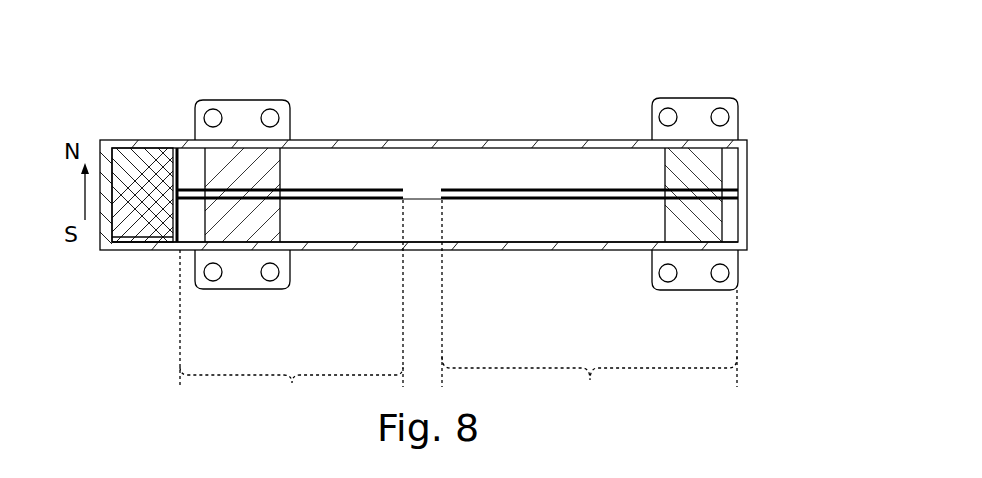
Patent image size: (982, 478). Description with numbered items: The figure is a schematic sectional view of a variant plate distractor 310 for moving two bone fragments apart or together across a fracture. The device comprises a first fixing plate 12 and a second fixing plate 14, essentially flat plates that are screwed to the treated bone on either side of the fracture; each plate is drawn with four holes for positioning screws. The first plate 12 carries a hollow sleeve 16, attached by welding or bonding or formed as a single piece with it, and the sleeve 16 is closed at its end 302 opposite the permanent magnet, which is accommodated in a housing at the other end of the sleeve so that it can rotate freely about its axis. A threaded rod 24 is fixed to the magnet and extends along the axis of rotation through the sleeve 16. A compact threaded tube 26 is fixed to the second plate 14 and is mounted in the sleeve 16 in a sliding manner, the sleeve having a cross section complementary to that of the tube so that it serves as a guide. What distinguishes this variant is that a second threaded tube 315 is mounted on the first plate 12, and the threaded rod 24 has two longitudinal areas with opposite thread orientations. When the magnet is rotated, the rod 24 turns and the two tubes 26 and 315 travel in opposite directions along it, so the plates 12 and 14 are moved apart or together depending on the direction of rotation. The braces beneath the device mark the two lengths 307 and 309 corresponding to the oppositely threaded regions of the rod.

The first fixing plate 12 is at (243, 122).
The second fixing plate 14 is at (692, 115).
The sleeve 16 is at (538, 250).
The threaded rod 24 is at (419, 192).
The threaded tube 26 is at (712, 152).
The end of the sleeve 302 is at (743, 208).
The first section length 307 is at (291, 308).
The second section length 309 is at (589, 307).
The plate distractor 310 is at (560, 106).
The second threaded tube 315 is at (270, 156).